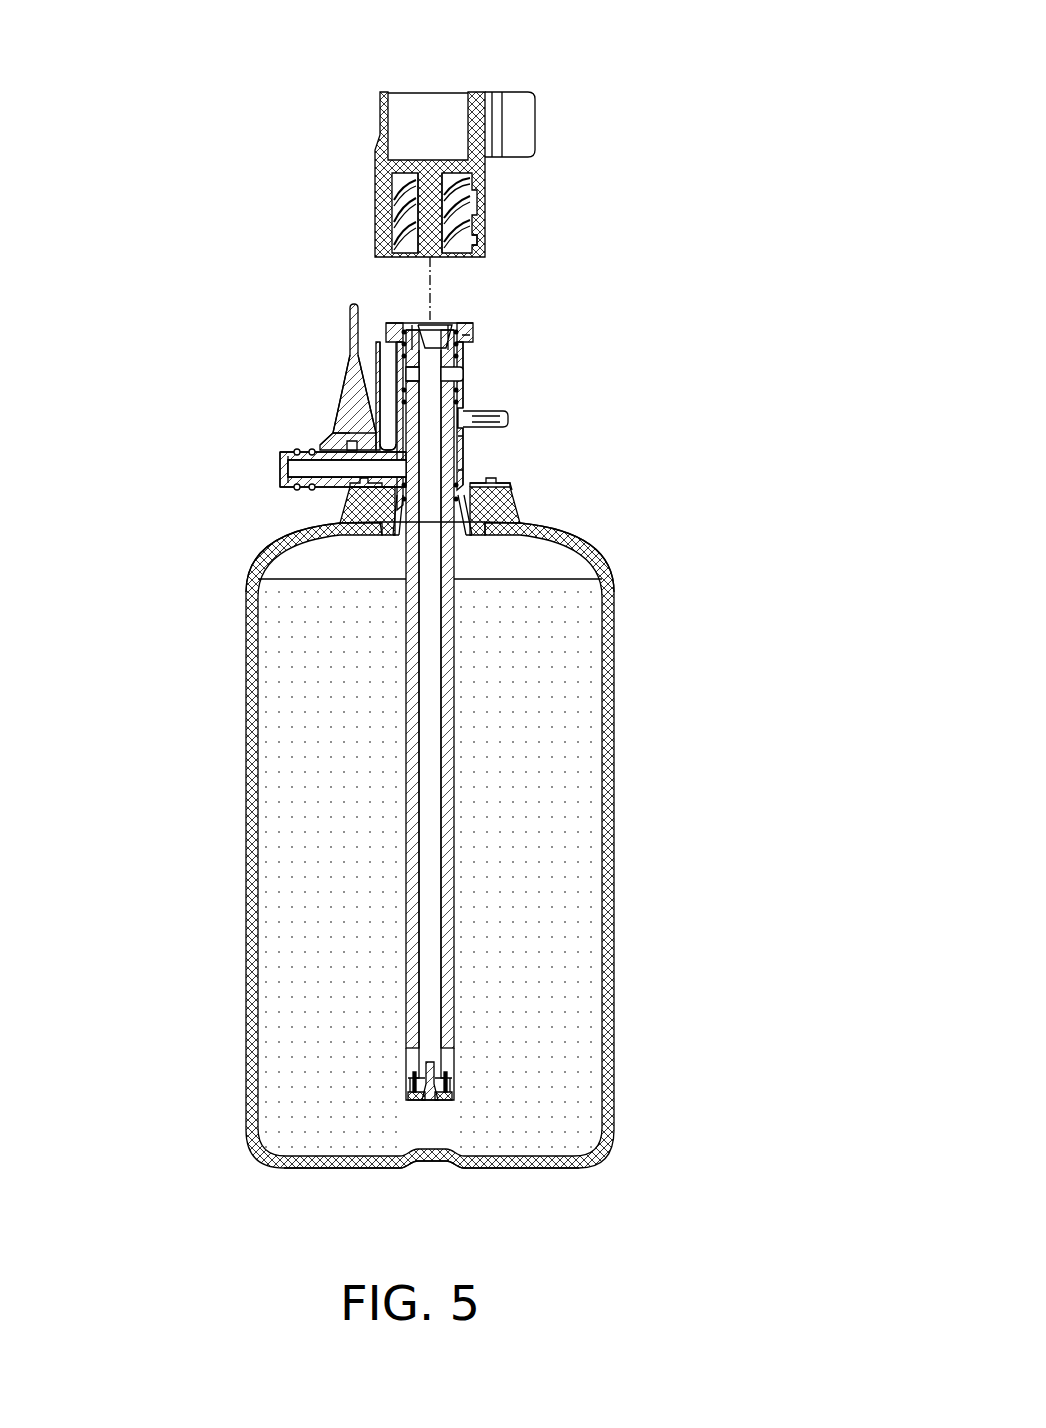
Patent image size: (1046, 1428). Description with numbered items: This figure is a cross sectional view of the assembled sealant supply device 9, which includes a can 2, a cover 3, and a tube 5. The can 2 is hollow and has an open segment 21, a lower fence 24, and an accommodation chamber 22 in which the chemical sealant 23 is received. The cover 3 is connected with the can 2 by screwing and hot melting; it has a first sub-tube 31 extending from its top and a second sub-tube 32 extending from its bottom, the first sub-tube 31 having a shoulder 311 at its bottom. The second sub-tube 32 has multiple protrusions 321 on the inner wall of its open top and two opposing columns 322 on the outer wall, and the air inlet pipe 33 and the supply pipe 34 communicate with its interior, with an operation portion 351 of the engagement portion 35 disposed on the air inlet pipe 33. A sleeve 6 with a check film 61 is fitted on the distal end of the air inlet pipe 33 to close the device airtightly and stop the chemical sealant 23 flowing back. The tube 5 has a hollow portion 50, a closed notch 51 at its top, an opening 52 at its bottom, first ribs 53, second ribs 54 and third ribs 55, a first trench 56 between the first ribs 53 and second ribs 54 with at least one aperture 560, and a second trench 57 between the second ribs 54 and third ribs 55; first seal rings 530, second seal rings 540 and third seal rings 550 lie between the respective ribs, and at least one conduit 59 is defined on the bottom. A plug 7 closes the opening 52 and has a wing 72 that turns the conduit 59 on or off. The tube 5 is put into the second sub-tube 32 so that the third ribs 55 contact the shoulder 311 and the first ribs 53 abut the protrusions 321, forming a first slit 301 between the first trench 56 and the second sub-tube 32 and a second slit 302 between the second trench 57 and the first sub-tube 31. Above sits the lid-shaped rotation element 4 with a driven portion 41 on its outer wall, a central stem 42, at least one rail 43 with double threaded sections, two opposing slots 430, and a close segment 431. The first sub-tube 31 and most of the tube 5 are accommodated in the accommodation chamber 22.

The can 2 is at (607, 811).
The open segment 21 is at (378, 505).
The accommodation chamber 22 is at (578, 568).
The chemical sealant 23 is at (580, 942).
The lower fence 24 is at (555, 1170).
The cover 3 is at (466, 475).
The first sub-tube 31 is at (392, 530).
The shoulder 311 is at (467, 546).
The second sub-tube 32 is at (462, 388).
The protrusions 321 is at (398, 322).
The columns 322 is at (458, 333).
The air inlet pipe 33 is at (345, 483).
The supply pipe 34 is at (508, 414).
The engagement portion 35 is at (318, 447).
The operation portion 351 is at (353, 364).
The first slit 301 is at (473, 370).
The second slit 302 is at (466, 440).
The rotation element 4 is at (385, 117).
The driven portion 41 is at (527, 108).
The central stem 42 is at (410, 192).
The rail 43 is at (393, 207).
The close segment 431 is at (483, 178).
The slots 430 is at (477, 240).
The tube 5 is at (452, 713).
The hollow portion 50 is at (432, 778).
The closed notch 51 is at (433, 338).
The opening 52 is at (436, 1057).
The first ribs 53 is at (387, 335).
The first seal rings 530 is at (392, 343).
The second ribs 54 is at (398, 377).
The second seal rings 540 is at (397, 388).
The third ribs 55 is at (482, 505).
The third seal rings 550 is at (486, 490).
The first trench 56 is at (470, 378).
The aperture 560 is at (452, 375).
The second trench 57 is at (458, 447).
The conduit 59 is at (457, 1092).
The sleeve 6 is at (296, 454).
The check film 61 is at (282, 471).
The plug 7 is at (413, 1098).
The wing 72 is at (415, 1088).
The sealant supply device 9 is at (178, 238).